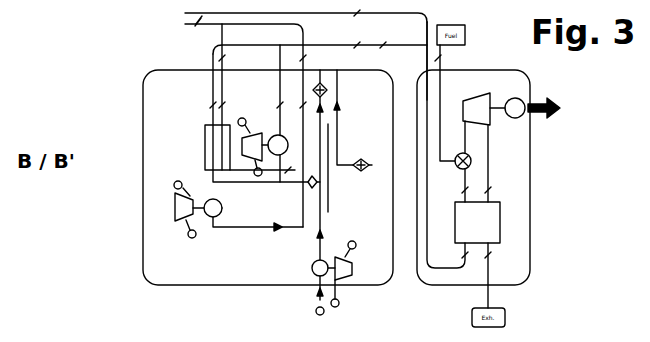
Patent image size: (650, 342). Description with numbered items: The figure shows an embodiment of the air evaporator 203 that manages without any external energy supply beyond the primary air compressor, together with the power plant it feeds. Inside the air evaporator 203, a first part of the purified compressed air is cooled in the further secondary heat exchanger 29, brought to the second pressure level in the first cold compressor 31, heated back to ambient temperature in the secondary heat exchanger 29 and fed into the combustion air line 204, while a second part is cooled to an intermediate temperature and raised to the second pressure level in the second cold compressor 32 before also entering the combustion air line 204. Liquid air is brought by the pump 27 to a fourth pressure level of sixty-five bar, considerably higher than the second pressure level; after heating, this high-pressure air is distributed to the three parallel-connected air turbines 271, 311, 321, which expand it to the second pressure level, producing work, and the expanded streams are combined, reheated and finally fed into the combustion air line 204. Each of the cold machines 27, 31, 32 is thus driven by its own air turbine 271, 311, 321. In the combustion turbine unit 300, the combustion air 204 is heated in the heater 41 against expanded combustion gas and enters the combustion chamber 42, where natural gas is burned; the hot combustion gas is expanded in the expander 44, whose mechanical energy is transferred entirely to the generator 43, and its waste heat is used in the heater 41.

The air evaporator 203 is at (238, 285).
The combustion air line 204 is at (426, 63).
The pump 27 is at (314, 268).
The air turbine 271 is at (351, 245).
The further secondary heat exchanger 29 is at (214, 155).
The power generation section 300 is at (508, 70).
The first cold compressor 31 is at (213, 208).
The air turbine 311 is at (195, 183).
The second cold compressor 32 is at (275, 145).
The air turbine 321 is at (250, 111).
The heater 41 is at (477, 222).
The combustion chamber 42 is at (468, 154).
The generator 43 is at (515, 119).
The expander 44 is at (476, 109).